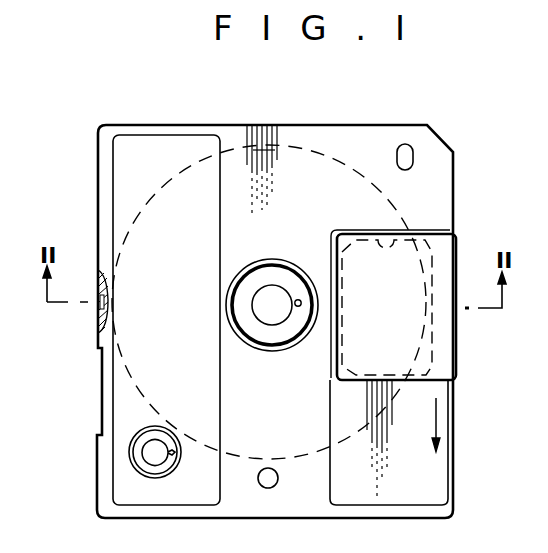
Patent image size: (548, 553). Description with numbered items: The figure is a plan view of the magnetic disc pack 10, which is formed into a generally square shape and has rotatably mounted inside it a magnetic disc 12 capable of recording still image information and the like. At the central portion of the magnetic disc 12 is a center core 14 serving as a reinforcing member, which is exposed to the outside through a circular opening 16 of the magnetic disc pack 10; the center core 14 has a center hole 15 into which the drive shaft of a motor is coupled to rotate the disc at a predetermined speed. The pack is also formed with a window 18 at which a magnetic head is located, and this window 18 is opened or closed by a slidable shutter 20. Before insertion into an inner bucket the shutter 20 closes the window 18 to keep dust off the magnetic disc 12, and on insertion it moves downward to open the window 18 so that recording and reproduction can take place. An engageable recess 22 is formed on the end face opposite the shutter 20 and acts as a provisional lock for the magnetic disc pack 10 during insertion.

The magnetic disc pack 10 is at (332, 126).
The magnetic disc 12 is at (352, 146).
The center core 14 is at (262, 278).
The center hole 15 is at (270, 311).
The circular opening 16 is at (300, 274).
The window 18 is at (402, 232).
The shutter 20 is at (445, 258).
The engageable recess 22 is at (101, 304).